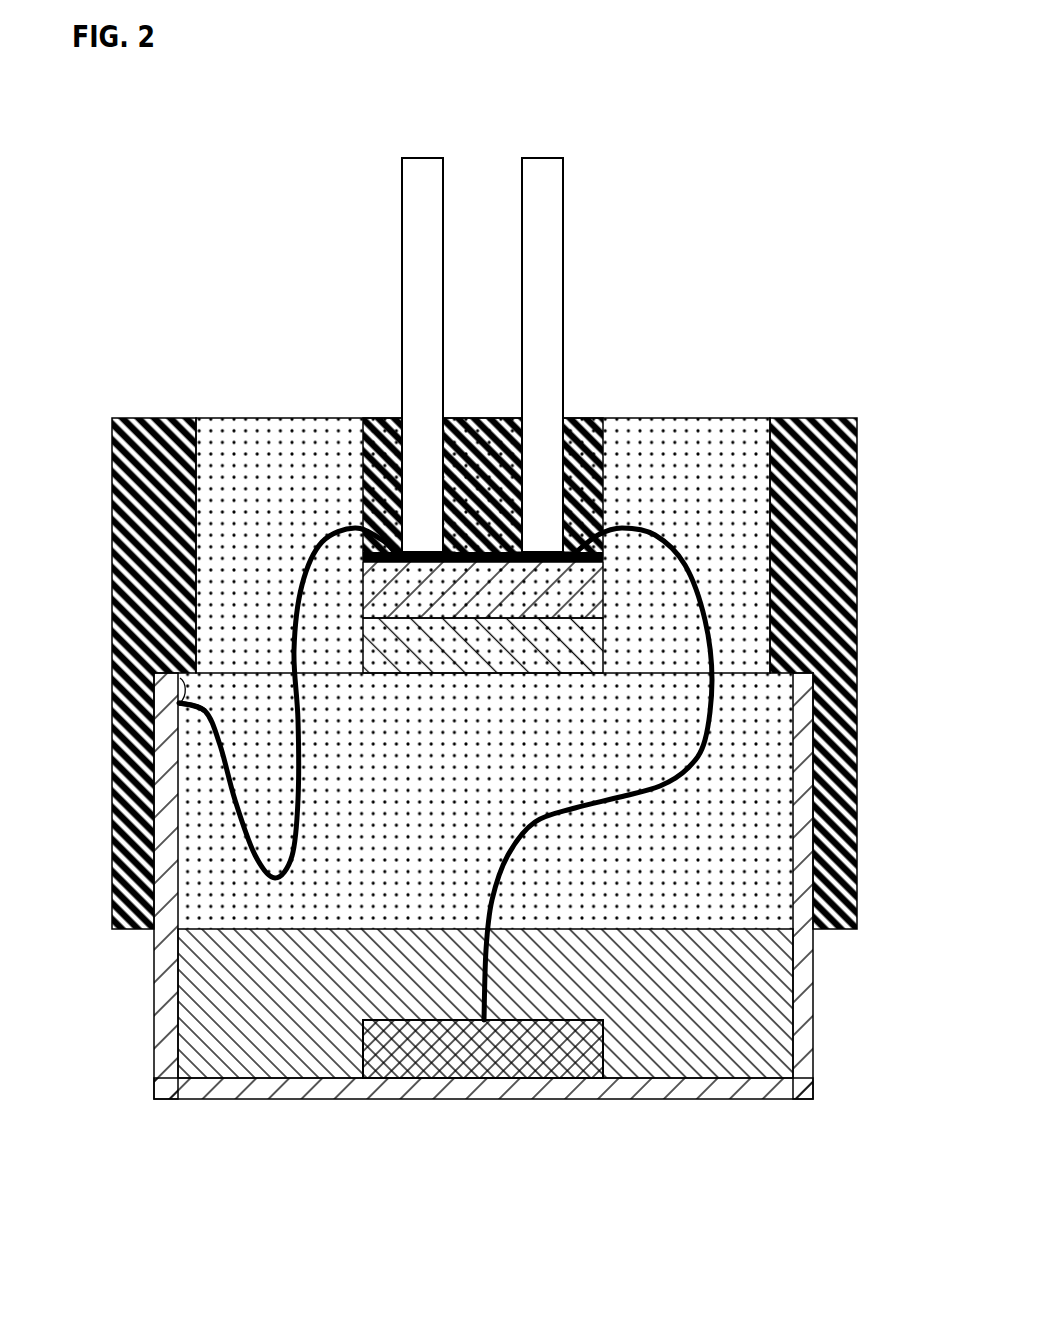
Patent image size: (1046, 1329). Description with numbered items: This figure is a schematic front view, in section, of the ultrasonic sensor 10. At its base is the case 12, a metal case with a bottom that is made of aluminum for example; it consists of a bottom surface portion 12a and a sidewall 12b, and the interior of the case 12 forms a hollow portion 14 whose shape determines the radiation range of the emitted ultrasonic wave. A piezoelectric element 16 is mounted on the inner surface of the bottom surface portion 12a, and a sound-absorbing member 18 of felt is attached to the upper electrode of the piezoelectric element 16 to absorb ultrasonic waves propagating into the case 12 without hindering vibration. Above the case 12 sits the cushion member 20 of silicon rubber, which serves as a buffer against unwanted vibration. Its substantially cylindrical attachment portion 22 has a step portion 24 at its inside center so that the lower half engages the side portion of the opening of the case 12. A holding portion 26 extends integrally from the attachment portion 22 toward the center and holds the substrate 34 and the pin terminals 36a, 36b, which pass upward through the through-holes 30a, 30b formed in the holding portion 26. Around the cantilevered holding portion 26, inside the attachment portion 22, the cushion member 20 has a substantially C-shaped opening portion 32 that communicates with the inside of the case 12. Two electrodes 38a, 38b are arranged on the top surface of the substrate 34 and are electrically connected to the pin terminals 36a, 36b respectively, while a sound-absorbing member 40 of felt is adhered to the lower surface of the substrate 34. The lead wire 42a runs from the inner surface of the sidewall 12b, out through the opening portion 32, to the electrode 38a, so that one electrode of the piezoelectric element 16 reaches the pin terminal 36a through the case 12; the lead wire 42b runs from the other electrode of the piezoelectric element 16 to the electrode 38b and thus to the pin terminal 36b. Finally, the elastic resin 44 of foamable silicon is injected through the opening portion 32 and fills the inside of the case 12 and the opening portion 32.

The ultrasonic sensor 10 is at (170, 98).
The case 12 is at (425, 930).
The bottom surface portion 12a is at (276, 1100).
The sidewall 12b is at (153, 1023).
The hollow portion 14 is at (723, 896).
The piezoelectric element 16 is at (514, 1065).
The sound-absorbing member 18 is at (668, 1040).
The cushion member 20 is at (454, 615).
The attachment portion 22 is at (147, 416).
The step portion 24 is at (178, 702).
The holding portion 26 is at (580, 415).
The through-hole 30a is at (413, 462).
The through-hole 30b is at (553, 463).
The opening portion 32 is at (742, 458).
The substrate 34 is at (373, 591).
The pin terminal 36a is at (421, 163).
The pin terminal 36b is at (540, 163).
The electrode 38a is at (415, 462).
The electrode 38b is at (556, 463).
The sound-absorbing member 40 is at (367, 657).
The lead wire 42a is at (353, 553).
The lead wire 42b is at (654, 533).
The elastic resin 44 is at (737, 465).